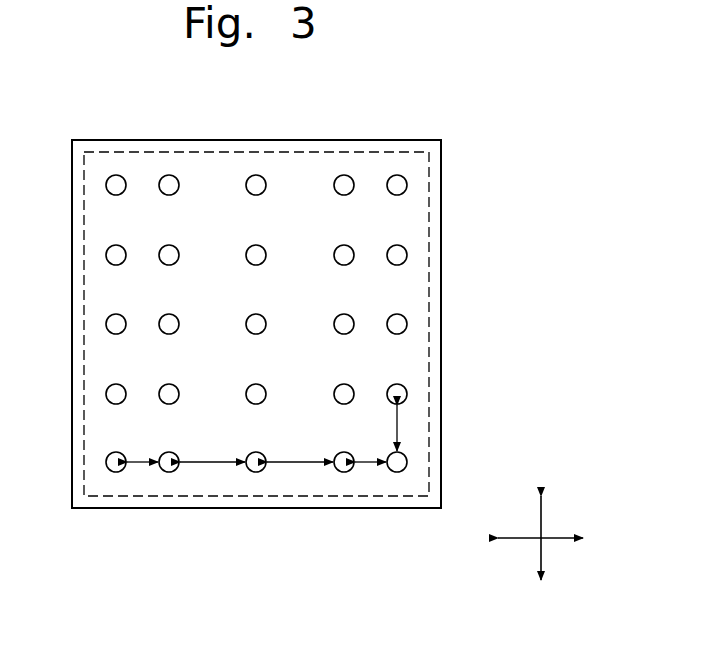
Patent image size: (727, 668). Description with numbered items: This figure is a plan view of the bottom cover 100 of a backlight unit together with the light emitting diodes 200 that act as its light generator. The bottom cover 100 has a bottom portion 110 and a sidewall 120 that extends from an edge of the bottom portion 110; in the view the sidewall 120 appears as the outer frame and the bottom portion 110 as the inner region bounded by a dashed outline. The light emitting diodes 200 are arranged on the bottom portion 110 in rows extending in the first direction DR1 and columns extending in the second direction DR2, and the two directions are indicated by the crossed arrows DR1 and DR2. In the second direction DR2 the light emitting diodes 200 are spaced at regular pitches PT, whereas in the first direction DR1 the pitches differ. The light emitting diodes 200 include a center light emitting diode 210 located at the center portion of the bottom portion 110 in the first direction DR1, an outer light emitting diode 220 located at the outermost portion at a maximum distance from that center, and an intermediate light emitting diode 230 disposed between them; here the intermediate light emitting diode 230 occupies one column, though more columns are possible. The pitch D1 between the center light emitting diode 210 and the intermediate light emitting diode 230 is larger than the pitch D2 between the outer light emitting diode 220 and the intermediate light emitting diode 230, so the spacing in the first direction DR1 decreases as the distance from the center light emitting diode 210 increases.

The bottom cover 100 is at (320, 324).
The bottom portion 110 is at (415, 284).
The sidewall 120 is at (515, 302).
The light emitting diodes 200 is at (256, 381).
The center light emitting diode 210 is at (269, 501).
The outer light emitting diode 220 is at (116, 472).
The intermediate light emitting diode 230 is at (169, 472).
The pitch D1 is at (256, 449).
The pitch D2 is at (256, 449).
The pitch PT is at (410, 428).
The first direction DR1 is at (560, 539).
The second direction DR2 is at (542, 528).